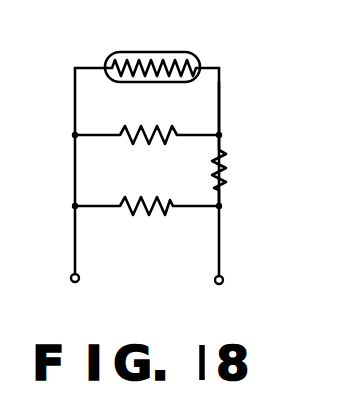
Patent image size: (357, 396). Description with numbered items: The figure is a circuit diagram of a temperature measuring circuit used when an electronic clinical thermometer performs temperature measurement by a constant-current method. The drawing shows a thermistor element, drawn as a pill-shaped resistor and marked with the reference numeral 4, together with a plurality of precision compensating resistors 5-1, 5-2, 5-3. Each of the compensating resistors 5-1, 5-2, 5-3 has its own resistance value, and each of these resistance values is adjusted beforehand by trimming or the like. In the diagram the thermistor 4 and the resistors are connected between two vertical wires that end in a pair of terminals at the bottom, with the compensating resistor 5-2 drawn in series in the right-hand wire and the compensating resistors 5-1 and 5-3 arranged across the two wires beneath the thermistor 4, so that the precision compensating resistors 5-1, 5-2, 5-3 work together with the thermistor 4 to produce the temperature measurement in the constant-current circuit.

The thermistor RTH 4 is at (200, 54).
The precision compensating resistor 5-1 is at (176, 126).
The precision compensating resistor 5-2 is at (223, 158).
The precision compensating resistor 5-3 is at (160, 214).